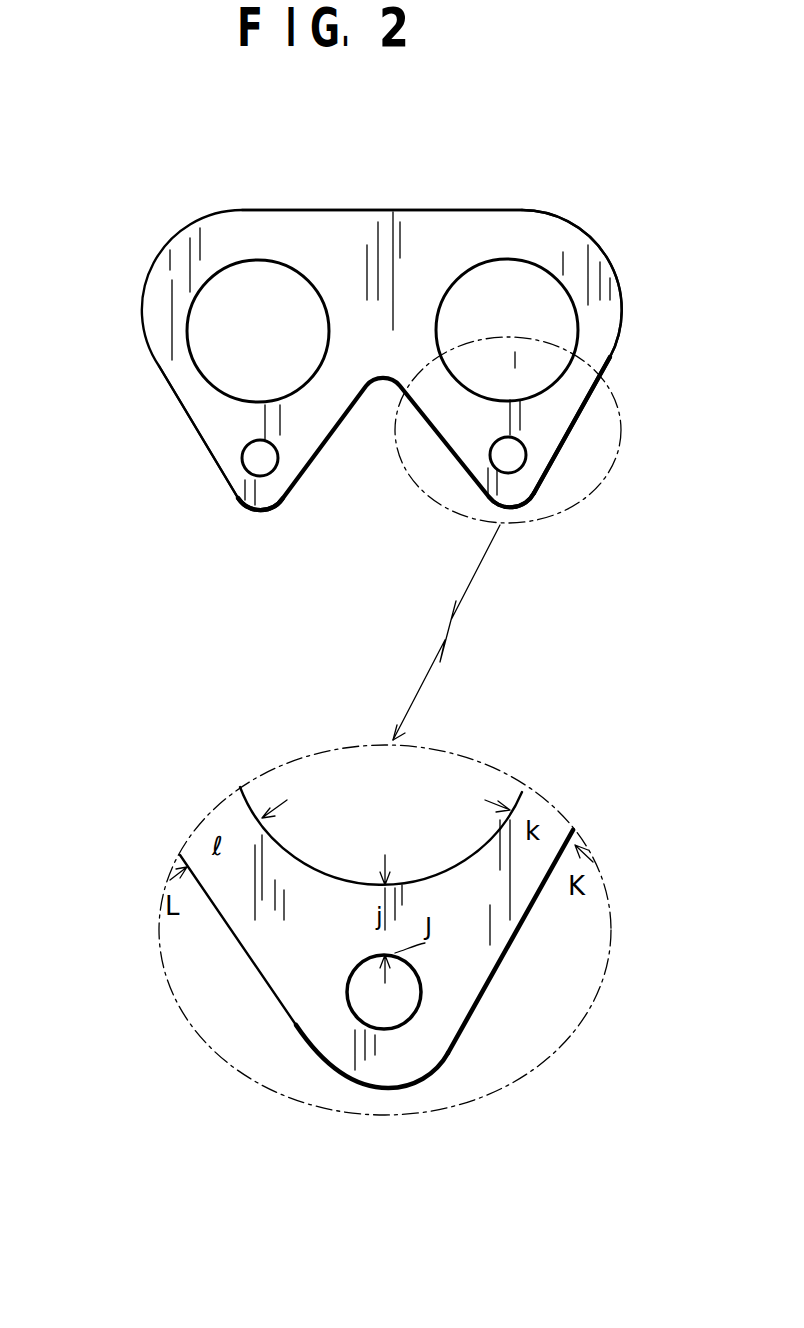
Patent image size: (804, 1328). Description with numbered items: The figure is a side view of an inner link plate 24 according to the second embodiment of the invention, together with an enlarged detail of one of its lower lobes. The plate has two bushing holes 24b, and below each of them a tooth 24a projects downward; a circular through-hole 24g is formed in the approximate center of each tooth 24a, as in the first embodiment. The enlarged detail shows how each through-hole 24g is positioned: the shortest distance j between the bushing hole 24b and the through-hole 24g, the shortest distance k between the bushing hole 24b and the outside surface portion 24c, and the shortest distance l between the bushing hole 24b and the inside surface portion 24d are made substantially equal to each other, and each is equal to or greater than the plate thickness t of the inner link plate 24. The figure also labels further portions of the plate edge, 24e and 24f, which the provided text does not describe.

The inner link plate 24 is at (368, 240).
The teeth 24a is at (258, 515).
The bushing hole 24b is at (212, 316).
The outside surface portion 24c is at (187, 420).
The inside surface portion 24d is at (270, 990).
The top edge 24e is at (432, 210).
The rounded corner 24f is at (605, 255).
The through-hole 24g is at (510, 465).